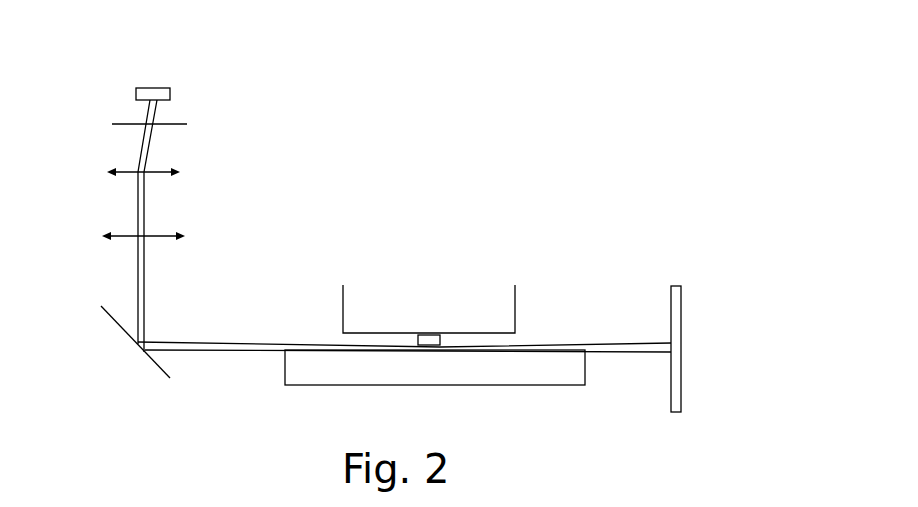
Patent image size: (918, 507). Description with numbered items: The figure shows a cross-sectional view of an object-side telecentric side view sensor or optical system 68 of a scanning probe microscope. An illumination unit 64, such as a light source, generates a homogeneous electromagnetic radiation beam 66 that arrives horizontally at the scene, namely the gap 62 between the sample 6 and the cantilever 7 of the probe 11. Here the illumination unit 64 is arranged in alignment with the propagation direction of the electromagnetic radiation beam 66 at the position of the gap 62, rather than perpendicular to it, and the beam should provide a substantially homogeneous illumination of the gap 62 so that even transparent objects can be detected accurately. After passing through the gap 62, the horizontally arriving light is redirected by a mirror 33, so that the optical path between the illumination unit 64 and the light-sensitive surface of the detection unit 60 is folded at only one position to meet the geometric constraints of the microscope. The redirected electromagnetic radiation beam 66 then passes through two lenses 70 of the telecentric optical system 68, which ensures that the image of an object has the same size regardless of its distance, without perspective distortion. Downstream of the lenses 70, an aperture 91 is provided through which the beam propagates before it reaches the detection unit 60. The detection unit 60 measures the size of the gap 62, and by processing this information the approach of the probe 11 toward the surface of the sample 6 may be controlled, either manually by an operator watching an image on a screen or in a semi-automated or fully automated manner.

The detection unit 60 is at (152, 88).
The aperture 91 is at (178, 122).
The lens 70 is at (127, 170).
The electromagnetic radiation beam 66 is at (187, 350).
The mirror 33 is at (108, 317).
The probe 11 is at (522, 270).
The gap 62 is at (450, 345).
The cantilever 7 is at (430, 337).
The sample 6 is at (402, 370).
The illumination unit 64 is at (676, 323).
The optical system 68 is at (505, 157).